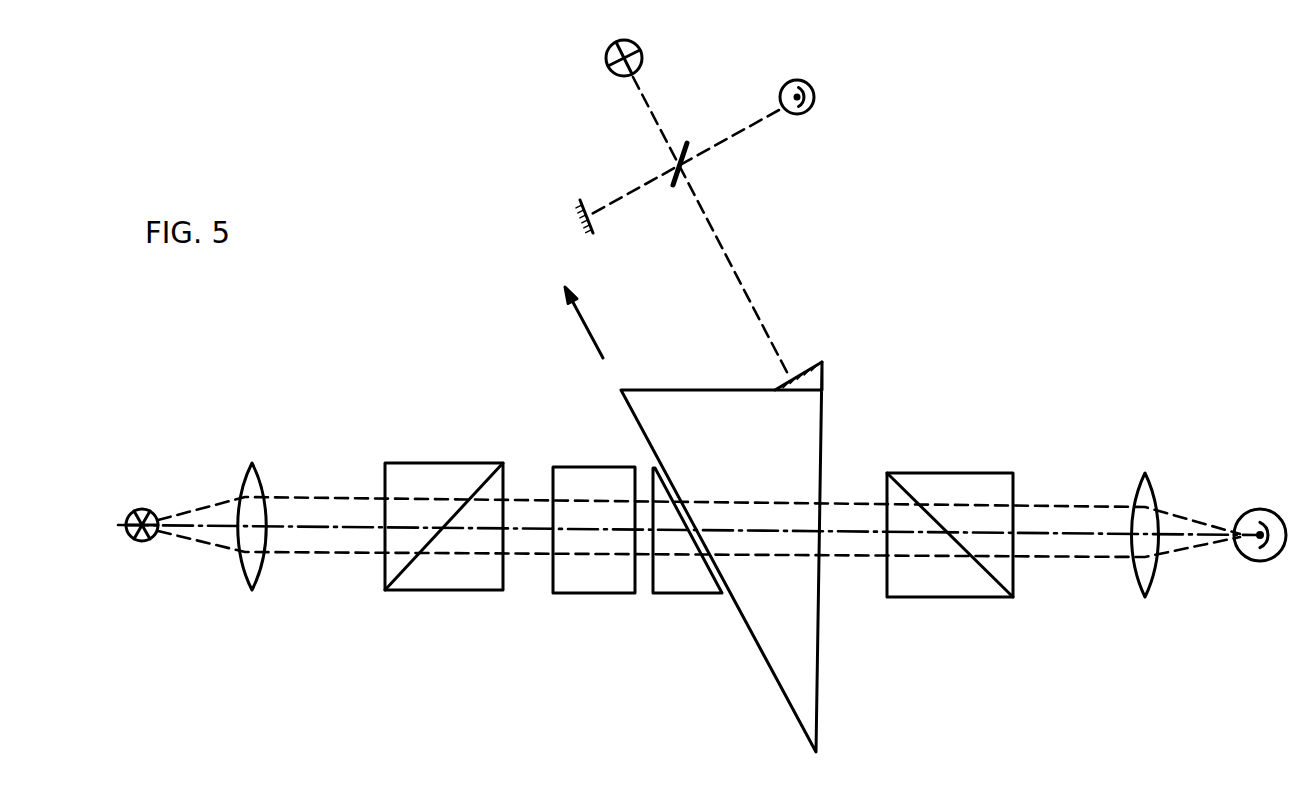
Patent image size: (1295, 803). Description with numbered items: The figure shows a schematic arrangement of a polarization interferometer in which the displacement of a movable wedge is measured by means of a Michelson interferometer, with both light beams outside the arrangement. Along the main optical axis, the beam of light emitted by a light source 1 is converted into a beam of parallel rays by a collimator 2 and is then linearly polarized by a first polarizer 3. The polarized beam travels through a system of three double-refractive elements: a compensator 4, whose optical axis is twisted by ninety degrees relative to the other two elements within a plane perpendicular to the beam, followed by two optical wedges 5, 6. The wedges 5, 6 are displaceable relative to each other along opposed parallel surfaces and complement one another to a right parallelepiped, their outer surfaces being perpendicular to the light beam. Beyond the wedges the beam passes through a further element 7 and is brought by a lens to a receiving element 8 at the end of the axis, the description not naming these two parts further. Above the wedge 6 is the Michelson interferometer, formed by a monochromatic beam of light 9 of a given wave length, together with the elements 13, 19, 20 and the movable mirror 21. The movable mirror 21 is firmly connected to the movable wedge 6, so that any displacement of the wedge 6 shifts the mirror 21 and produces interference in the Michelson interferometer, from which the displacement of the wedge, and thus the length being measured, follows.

The light source 1 is at (142, 553).
The collimator 2 is at (252, 558).
The first polarizer 3 is at (444, 559).
The compensator 4 is at (594, 561).
The optical wedge 5 is at (687, 563).
The movable optical wedge 6 is at (721, 557).
The beam splitter cube 7 is at (950, 565).
The detector 8 is at (1260, 562).
The monochromatic beam of light 9 is at (601, 61).
The Michelson interferometer element 13 is at (825, 100).
The Michelson interferometer element 19 is at (652, 163).
The Michelson interferometer element 20 is at (560, 220).
The movable mirror 21 is at (777, 370).